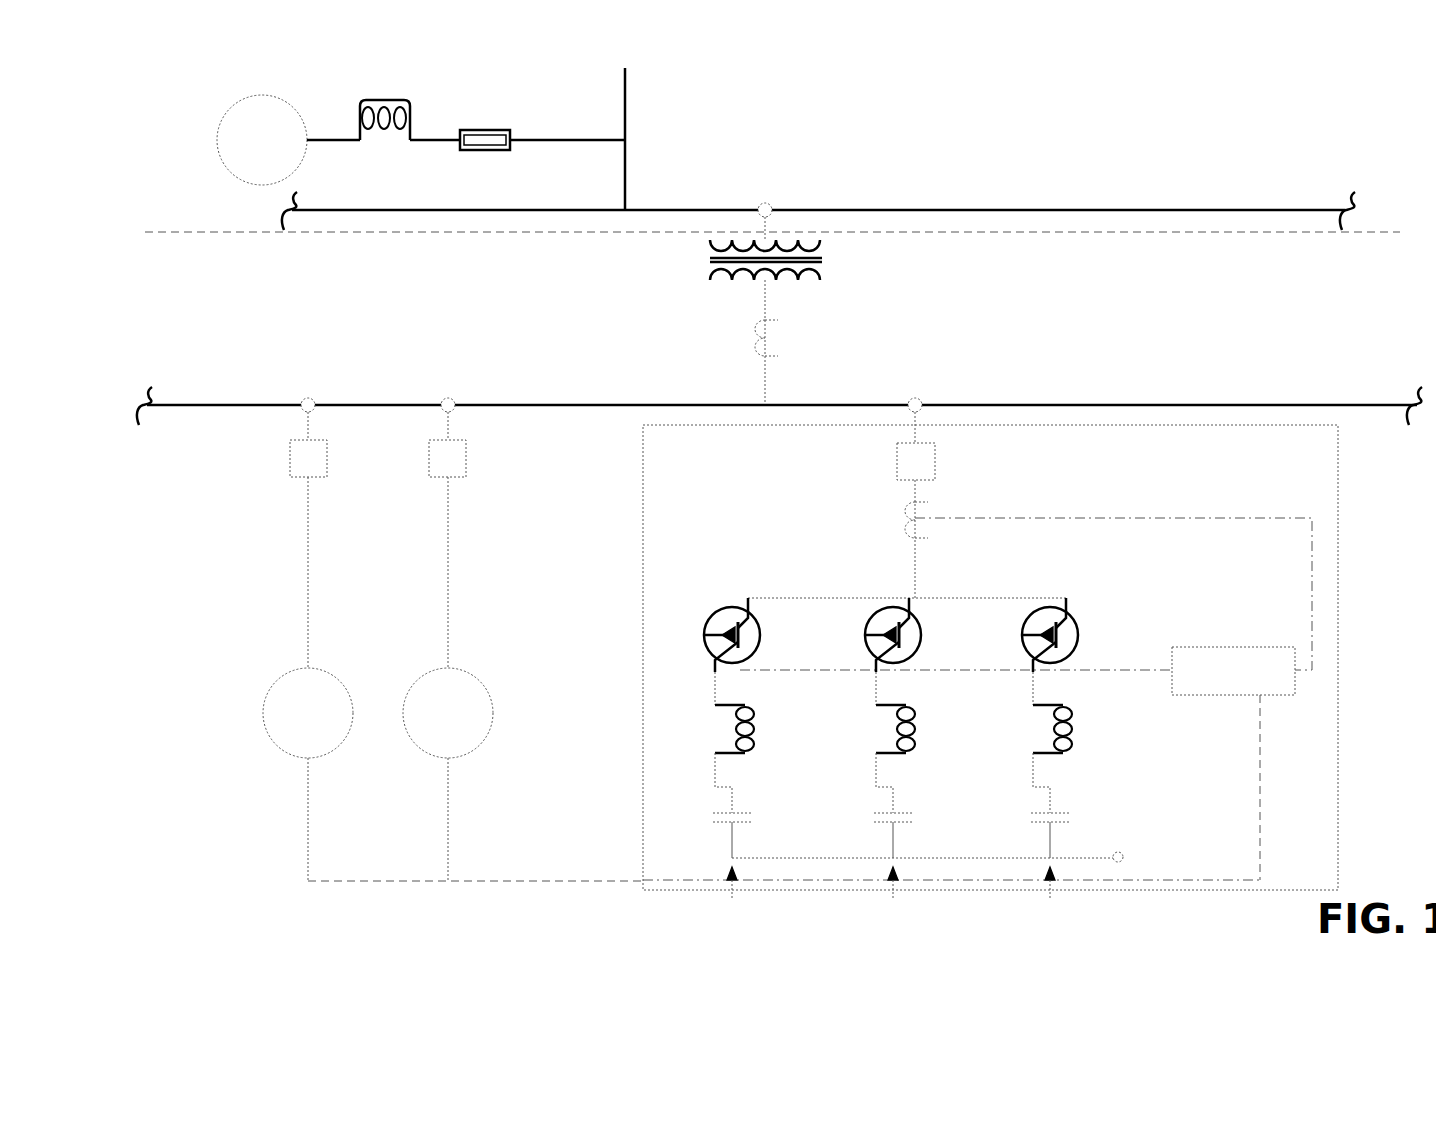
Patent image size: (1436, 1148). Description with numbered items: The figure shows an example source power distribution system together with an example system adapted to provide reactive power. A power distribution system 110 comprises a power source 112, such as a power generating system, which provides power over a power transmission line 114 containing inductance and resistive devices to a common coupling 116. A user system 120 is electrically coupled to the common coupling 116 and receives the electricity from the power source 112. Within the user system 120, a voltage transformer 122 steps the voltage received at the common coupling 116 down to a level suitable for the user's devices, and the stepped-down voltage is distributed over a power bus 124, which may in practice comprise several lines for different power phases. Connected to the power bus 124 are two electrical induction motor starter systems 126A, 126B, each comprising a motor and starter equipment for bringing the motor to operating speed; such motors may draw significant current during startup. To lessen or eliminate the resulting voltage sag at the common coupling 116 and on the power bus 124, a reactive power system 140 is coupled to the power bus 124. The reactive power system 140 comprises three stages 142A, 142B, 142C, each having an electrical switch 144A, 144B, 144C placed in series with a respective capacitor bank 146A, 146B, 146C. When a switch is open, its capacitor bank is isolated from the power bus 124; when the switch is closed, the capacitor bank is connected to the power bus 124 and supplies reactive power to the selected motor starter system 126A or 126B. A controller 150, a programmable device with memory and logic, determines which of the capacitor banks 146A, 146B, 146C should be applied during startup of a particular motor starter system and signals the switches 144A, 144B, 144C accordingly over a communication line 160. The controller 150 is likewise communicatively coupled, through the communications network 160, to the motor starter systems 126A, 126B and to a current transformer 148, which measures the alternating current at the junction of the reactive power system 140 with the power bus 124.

The power distribution system 110 is at (207, 112).
The power source 112 is at (772, 208).
The power transmission line 114 is at (730, 208).
The common coupling 116 is at (769, 204).
The user system 120 is at (248, 325).
The voltage transformer 122 is at (832, 270).
The power bus 124 is at (958, 400).
The electrical induction motor starter system 126A is at (262, 698).
The electrical induction motor starter system 126B is at (494, 705).
The reactive power system 140 is at (1338, 810).
The stage 142A is at (738, 896).
The stage 142B is at (897, 896).
The stage 142C is at (1052, 896).
The electrical switch 144A is at (704, 648).
The electrical switch 144B is at (865, 648).
The electrical switch 144C is at (1022, 648).
The capacitor bank 146A is at (751, 822).
The capacitor bank 146B is at (912, 822).
The capacitor bank 146C is at (1069, 822).
The current transformer 148 is at (898, 509).
The controller 150 is at (1247, 647).
The communication line 160 is at (1087, 518).